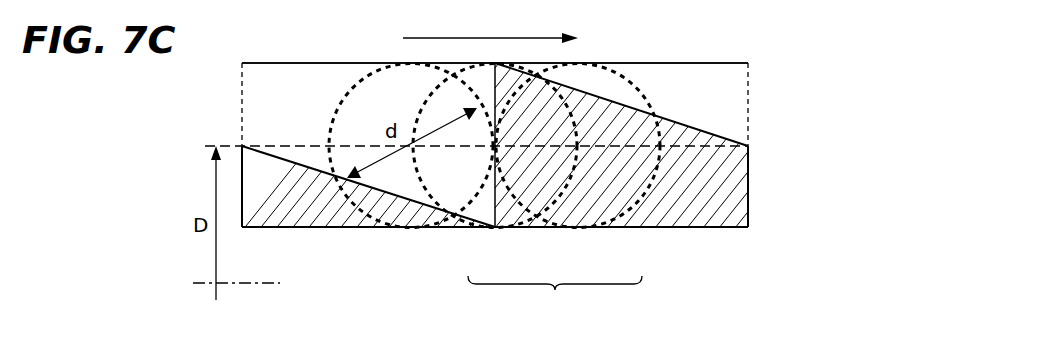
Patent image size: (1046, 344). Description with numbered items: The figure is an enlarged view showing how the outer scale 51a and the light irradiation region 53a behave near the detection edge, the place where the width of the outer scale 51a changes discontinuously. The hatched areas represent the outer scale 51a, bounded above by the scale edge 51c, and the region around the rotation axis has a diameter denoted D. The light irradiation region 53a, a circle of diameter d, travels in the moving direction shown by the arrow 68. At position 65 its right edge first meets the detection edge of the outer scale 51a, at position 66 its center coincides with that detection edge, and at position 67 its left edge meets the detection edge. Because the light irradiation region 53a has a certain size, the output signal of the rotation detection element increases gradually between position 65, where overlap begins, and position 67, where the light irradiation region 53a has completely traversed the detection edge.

The outer scale 51a is at (320, 215).
The upper edge of member 51c is at (282, 75).
The light irradiation region 53a is at (555, 296).
The position 65 is at (478, 229).
The position 66 is at (550, 229).
The position 67 is at (628, 229).
The arrow 68 is at (525, 38).